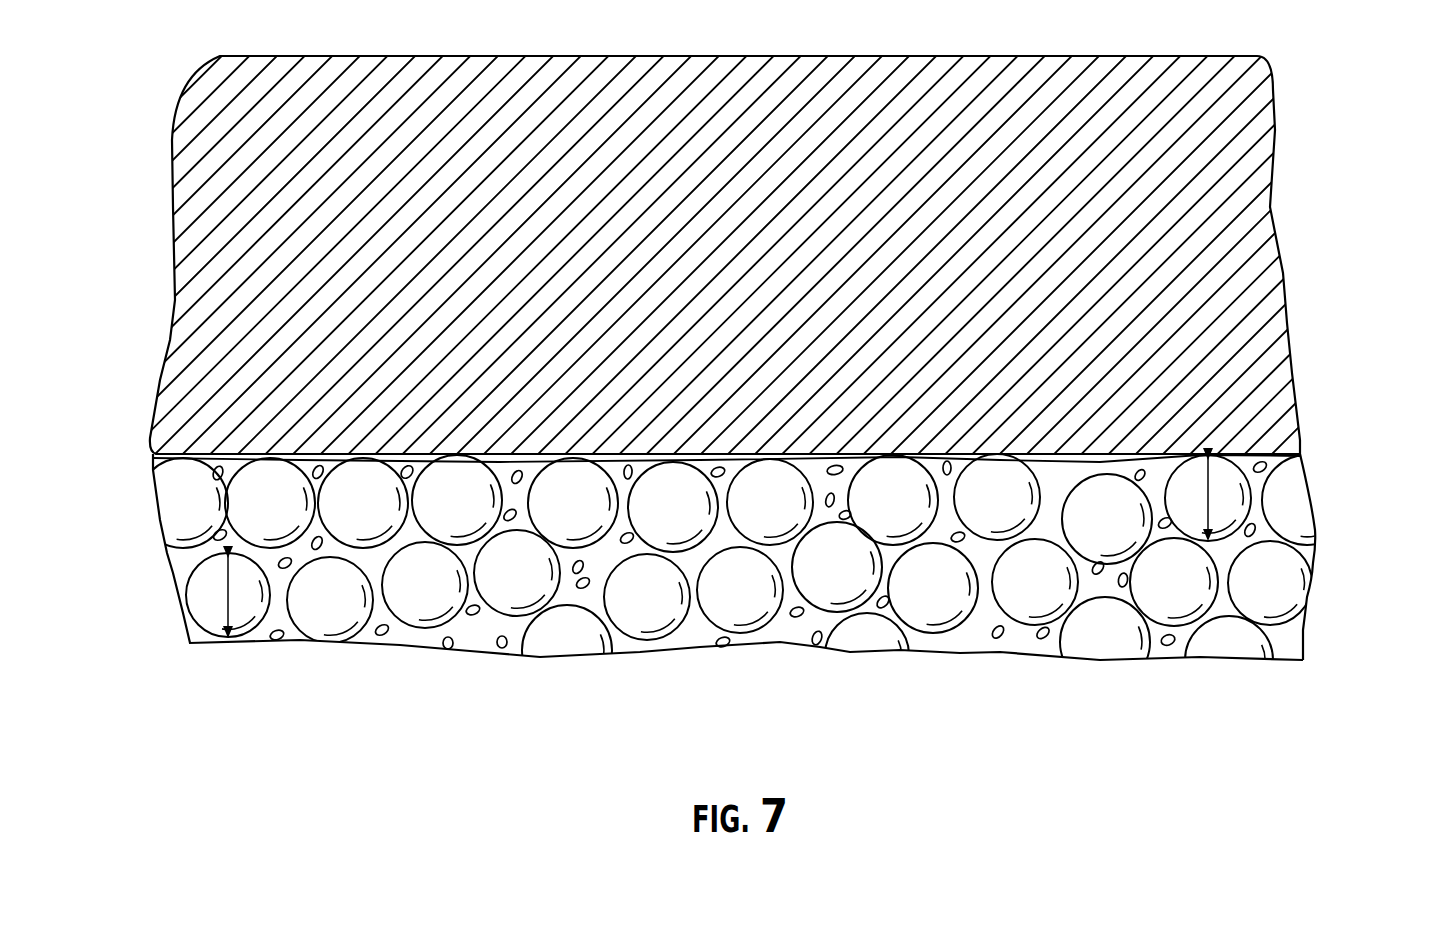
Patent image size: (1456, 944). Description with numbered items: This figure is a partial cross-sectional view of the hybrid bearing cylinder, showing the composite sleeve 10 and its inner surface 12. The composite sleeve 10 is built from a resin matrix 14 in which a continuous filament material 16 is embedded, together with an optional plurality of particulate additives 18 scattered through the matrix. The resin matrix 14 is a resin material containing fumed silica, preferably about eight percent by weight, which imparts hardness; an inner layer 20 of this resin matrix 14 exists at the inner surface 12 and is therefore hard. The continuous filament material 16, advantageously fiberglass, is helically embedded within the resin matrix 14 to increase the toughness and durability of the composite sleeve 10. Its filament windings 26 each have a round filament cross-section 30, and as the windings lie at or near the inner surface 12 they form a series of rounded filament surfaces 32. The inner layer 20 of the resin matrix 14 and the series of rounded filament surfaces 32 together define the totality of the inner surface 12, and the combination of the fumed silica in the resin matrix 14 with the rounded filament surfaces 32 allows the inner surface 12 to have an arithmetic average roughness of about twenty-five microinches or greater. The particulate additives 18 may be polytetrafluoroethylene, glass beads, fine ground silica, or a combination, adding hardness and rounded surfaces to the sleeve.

The composite sleeve 10 is at (728, 395).
The inner surface 12 is at (192, 447).
The resin matrix 14 is at (761, 584).
The continuous filament material 16 is at (747, 584).
The particulate additives 18 is at (793, 619).
The inner layer 20 is at (1305, 630).
The filament windings 26 is at (230, 648).
The round filament cross-section 30 is at (228, 594).
The rounded filament surfaces 32 is at (905, 453).